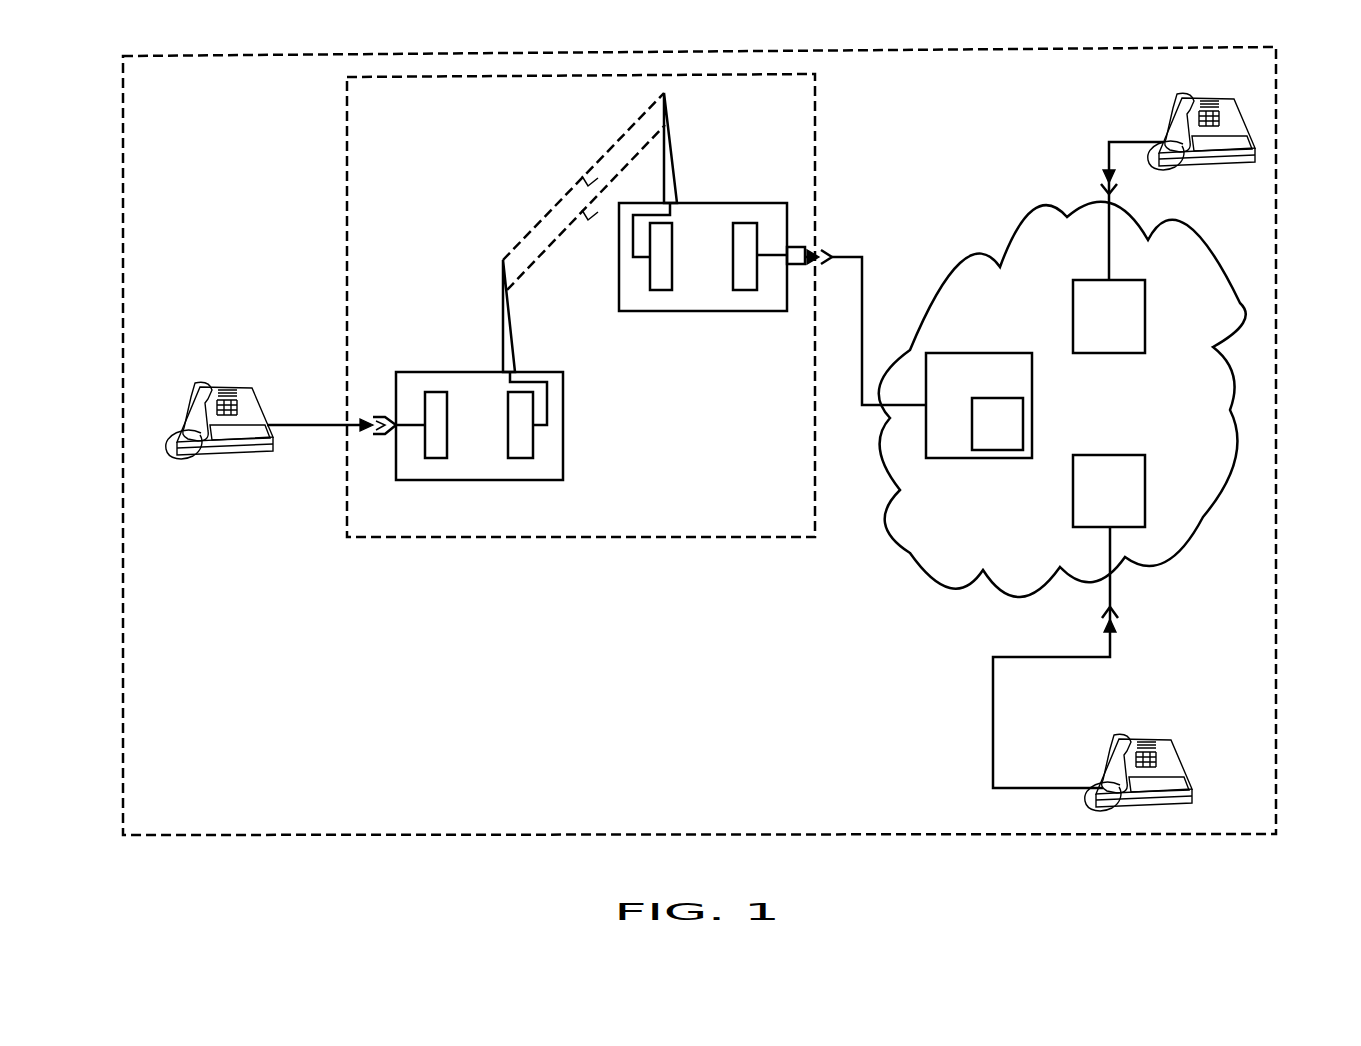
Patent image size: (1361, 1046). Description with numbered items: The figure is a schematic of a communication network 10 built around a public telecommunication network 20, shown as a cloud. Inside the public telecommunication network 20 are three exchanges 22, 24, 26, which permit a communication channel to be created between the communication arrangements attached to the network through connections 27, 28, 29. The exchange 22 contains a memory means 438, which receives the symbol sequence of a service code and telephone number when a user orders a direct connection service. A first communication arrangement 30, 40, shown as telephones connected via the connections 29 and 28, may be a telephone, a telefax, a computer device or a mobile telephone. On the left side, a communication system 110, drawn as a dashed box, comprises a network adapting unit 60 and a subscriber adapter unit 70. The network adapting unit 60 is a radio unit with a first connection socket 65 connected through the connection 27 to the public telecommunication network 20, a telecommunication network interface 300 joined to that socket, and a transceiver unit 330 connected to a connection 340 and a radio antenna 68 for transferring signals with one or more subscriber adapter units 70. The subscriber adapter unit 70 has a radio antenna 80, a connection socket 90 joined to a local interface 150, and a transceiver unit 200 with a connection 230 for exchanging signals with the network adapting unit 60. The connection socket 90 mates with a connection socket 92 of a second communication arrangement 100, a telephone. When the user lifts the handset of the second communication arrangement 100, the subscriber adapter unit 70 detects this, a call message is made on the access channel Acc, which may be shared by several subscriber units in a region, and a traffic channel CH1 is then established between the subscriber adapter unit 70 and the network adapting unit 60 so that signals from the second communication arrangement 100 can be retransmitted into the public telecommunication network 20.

The communication network 10 is at (1279, 650).
The public telecommunication network 20 is at (897, 550).
The exchange 22 is at (992, 387).
The exchange 24 is at (1123, 330).
The exchange 26 is at (1123, 505).
The connection 27 is at (829, 262).
The connection 28 is at (1098, 185).
The connection 29 is at (1120, 608).
The first communication arrangement 30 is at (1150, 735).
The first communication arrangement 40 is at (1225, 170).
The network adapting unit 60 is at (706, 313).
The first connection socket 65 is at (822, 250).
The radio antenna 68 is at (669, 121).
The subscriber adapter unit 70 is at (505, 482).
The radio antenna 80 is at (510, 318).
The connection socket 90 is at (386, 440).
The connection socket 92 is at (367, 416).
The second communication arrangement 100 is at (225, 462).
The communication system 110 is at (572, 539).
The local interface 150 is at (442, 460).
The transceiver unit 200 is at (528, 447).
The connection 230 is at (523, 368).
The telecommunication network interface 300 is at (745, 291).
The transceiver unit 330 is at (661, 291).
The connection 340 is at (678, 203).
The memory means 438 is at (1018, 438).
The access channel Acc is at (552, 200).
The traffic channel CH1 is at (560, 240).